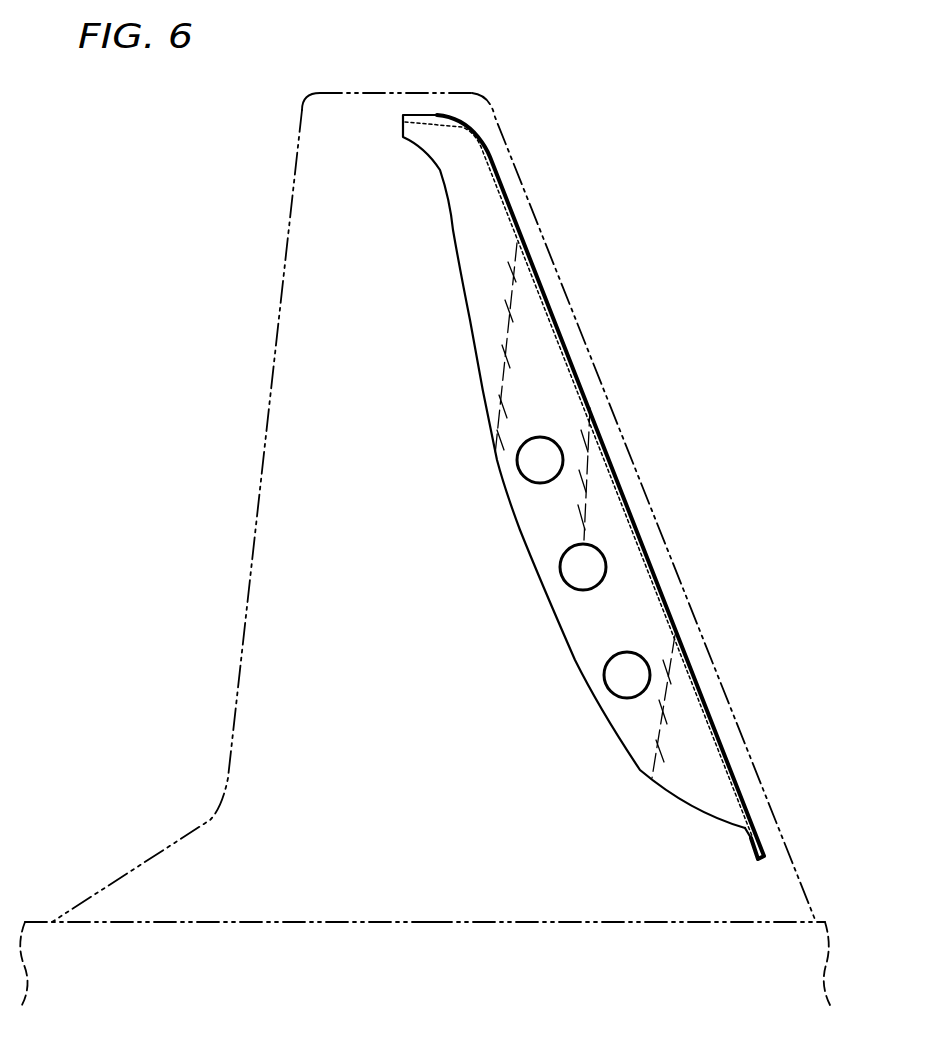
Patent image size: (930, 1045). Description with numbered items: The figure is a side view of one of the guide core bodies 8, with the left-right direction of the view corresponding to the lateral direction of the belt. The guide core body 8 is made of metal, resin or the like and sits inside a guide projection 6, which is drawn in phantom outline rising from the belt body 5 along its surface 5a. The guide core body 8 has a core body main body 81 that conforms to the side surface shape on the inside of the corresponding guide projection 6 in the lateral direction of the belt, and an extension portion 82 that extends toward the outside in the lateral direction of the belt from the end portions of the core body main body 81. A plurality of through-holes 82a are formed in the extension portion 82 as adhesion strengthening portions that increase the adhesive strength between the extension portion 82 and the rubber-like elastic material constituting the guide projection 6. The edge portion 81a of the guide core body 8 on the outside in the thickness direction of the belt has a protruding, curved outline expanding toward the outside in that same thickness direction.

The vehicle body 5 is at (80, 952).
The body surface 5a is at (385, 928).
The guide projection 6 is at (305, 282).
The guide core body 8 is at (558, 213).
The core body main body 81 is at (630, 505).
The edge portion 81a is at (760, 841).
The extension portion 82 is at (487, 328).
The through-hole 82a is at (517, 468).